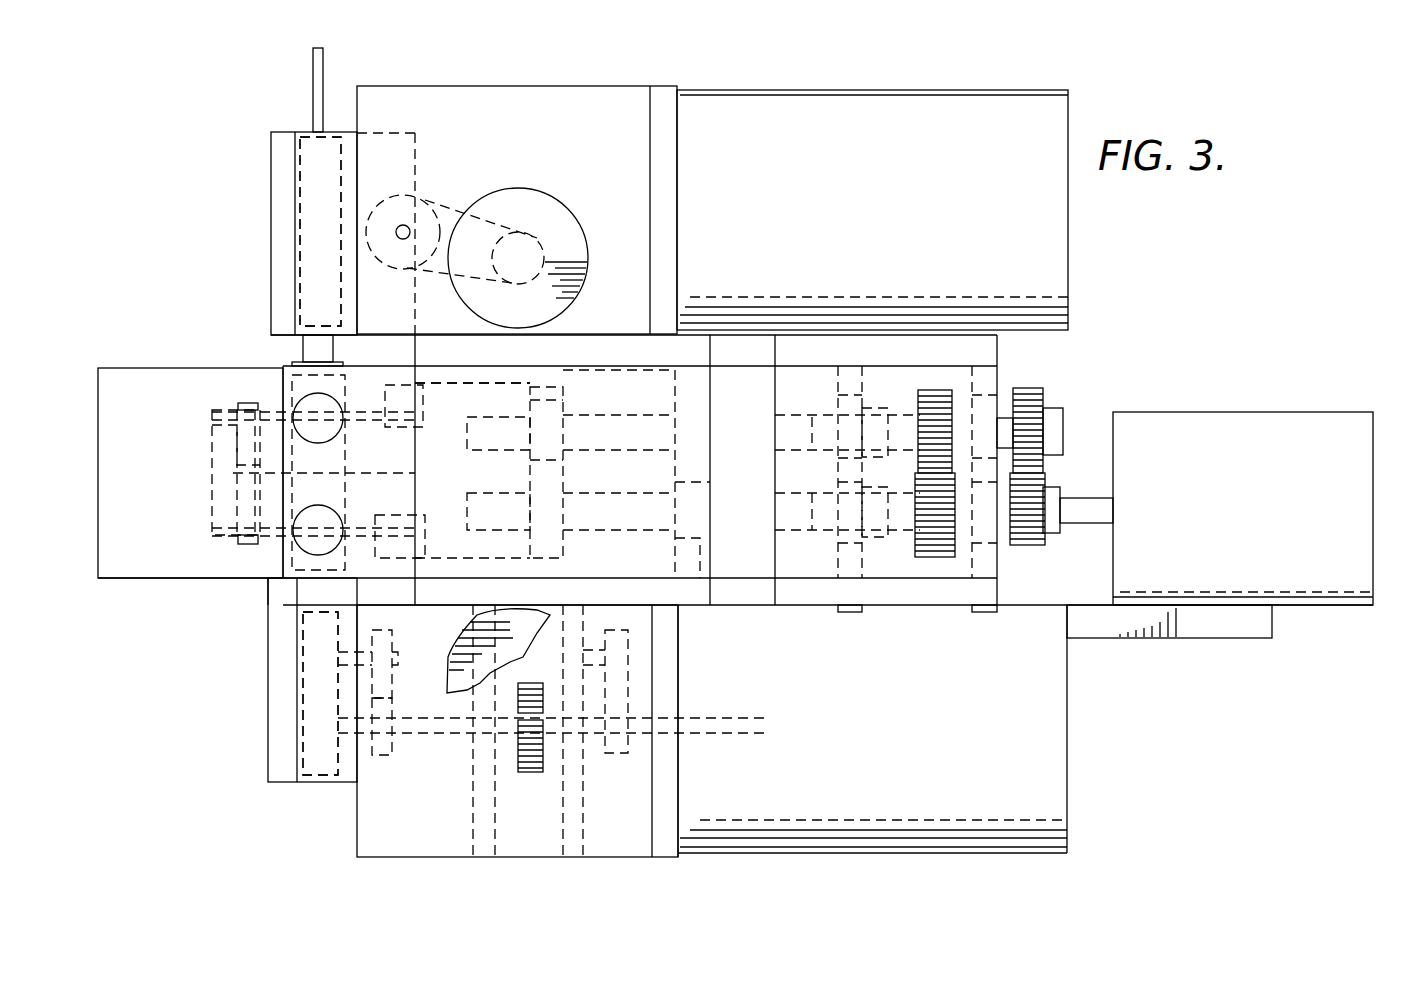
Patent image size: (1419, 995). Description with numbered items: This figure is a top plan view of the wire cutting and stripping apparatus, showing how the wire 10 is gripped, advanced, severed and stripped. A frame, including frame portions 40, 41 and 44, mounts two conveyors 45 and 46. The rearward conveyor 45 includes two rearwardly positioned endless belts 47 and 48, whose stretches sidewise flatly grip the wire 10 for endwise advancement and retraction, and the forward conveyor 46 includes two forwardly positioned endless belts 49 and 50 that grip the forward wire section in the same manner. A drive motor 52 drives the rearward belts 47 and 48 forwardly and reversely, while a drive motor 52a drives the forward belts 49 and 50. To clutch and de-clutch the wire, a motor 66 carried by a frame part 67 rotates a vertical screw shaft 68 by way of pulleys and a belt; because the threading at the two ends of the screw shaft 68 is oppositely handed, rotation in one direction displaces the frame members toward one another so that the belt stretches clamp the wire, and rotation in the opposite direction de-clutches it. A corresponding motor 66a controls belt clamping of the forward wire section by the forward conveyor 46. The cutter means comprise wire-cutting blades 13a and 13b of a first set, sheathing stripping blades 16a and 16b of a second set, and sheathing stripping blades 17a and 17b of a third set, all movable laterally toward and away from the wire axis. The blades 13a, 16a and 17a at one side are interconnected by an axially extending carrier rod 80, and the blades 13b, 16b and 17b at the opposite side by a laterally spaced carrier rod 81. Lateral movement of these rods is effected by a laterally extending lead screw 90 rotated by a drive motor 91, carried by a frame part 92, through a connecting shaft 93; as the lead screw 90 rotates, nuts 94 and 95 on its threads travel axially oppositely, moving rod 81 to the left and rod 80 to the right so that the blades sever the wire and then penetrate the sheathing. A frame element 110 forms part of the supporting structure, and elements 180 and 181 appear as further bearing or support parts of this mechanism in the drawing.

The wire 10 is at (313, 75).
The frame part 67 is at (481, 110).
The frame 40 is at (615, 95).
The frame 44 is at (672, 135).
The conveyor 45 is at (271, 180).
The endless belt 47 is at (302, 247).
The endless belt 48 is at (320, 231).
The vertical screw shaft 68 is at (410, 205).
The motor 66 is at (550, 210).
The motor 52 is at (872, 210).
The blade 17b is at (357, 400).
The blade 17a is at (263, 398).
The bearing 181 is at (425, 412).
The nut 94 is at (563, 410).
The frame element 110 is at (632, 408).
The wire-cutting blade 13a is at (240, 470).
The carrier rod 81 is at (417, 440).
The wire-cutting blade 13b is at (417, 480).
The carrier rod 80 is at (240, 493).
The bearing assembly 180 is at (206, 514).
The blade 16a is at (270, 538).
The blade 16b is at (368, 538).
The lead screw 90 is at (597, 528).
The nut 95 is at (700, 530).
The connecting shaft 93 is at (1082, 513).
The drive motor 91 is at (1243, 508).
The frame part 92 is at (1155, 640).
The motor 66a is at (450, 668).
The endless belt 49 is at (302, 712).
The endless belt 50 is at (320, 693).
The conveyor 46 is at (270, 746).
The drive motor 52a is at (872, 729).
The frame 41 is at (523, 832).